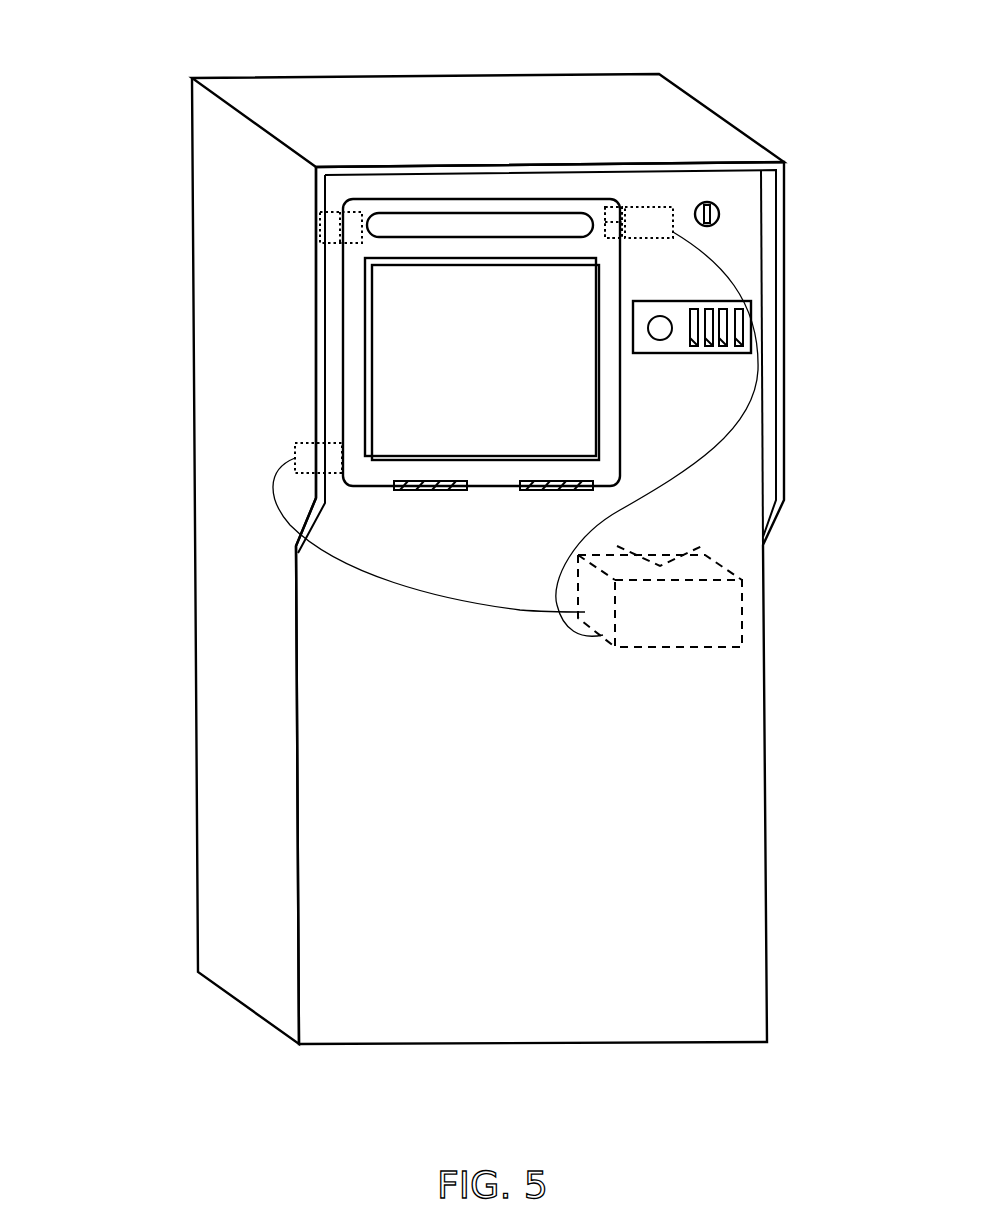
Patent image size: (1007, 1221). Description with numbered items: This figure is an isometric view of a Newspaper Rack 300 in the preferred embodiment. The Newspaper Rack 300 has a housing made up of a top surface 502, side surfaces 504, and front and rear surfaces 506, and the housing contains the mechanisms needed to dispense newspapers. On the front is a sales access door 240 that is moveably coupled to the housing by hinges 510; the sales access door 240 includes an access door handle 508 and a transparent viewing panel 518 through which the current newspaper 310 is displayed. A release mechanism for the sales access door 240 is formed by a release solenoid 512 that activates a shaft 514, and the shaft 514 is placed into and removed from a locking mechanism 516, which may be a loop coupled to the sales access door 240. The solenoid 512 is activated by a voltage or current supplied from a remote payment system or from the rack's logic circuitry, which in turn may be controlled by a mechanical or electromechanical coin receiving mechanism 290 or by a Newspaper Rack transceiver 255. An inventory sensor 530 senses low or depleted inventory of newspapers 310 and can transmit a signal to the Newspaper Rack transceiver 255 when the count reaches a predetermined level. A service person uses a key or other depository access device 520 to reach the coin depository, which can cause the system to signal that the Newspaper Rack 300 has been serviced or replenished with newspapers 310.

The Newspaper Rack 300 is at (482, 523).
The top surface 502 is at (380, 115).
The side surfaces 504 is at (240, 772).
The front and rear surfaces 506 is at (680, 865).
The access door handle 508 is at (402, 225).
The hinges 510 is at (413, 492).
The release solenoid 512 is at (653, 220).
The shaft 514 is at (622, 218).
The locking mechanism 516 is at (613, 210).
The transparent viewing panel 518 is at (395, 283).
The depository access device 520 is at (720, 223).
The sales access door 240 is at (357, 340).
The coin receiving mechanism 290 is at (690, 330).
The newspaper 310 is at (403, 349).
The inventory sensor 530 is at (313, 460).
The Newspaper Rack transceiver 255 is at (688, 612).